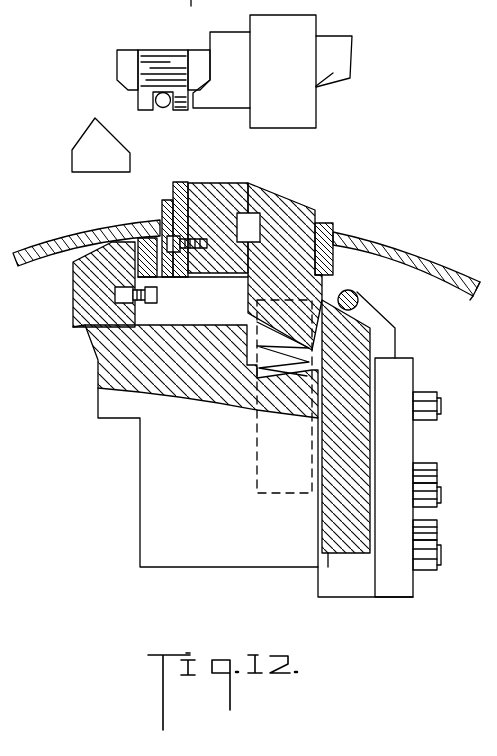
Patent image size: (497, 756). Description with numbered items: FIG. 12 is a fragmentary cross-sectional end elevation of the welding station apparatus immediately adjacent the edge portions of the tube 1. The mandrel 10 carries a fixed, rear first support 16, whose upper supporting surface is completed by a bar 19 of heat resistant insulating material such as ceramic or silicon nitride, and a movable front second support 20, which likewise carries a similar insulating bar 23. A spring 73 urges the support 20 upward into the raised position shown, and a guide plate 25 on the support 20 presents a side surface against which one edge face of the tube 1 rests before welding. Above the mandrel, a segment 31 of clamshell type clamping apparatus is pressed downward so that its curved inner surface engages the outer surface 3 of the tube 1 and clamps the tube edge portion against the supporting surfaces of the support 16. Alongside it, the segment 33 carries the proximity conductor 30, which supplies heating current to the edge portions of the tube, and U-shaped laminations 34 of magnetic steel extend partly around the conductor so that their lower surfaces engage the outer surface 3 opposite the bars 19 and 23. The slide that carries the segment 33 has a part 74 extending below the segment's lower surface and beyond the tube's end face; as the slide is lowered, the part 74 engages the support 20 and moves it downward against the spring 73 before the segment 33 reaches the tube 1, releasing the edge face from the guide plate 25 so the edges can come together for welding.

The tube 1 is at (386, 246).
The outer surface 3 is at (492, 193).
The mandrel 10 is at (157, 512).
The first support 16 is at (82, 308).
The bar 19 is at (160, 277).
The second support 20 is at (293, 213).
The bar 23 is at (172, 188).
The guide plate 25 is at (325, 225).
The proximity conductor 30 is at (164, 108).
The segment 31 is at (108, 142).
The segment 33 is at (333, 73).
The laminations 34 is at (138, 100).
The spring 73 is at (314, 358).
The part 74 is at (308, 128).